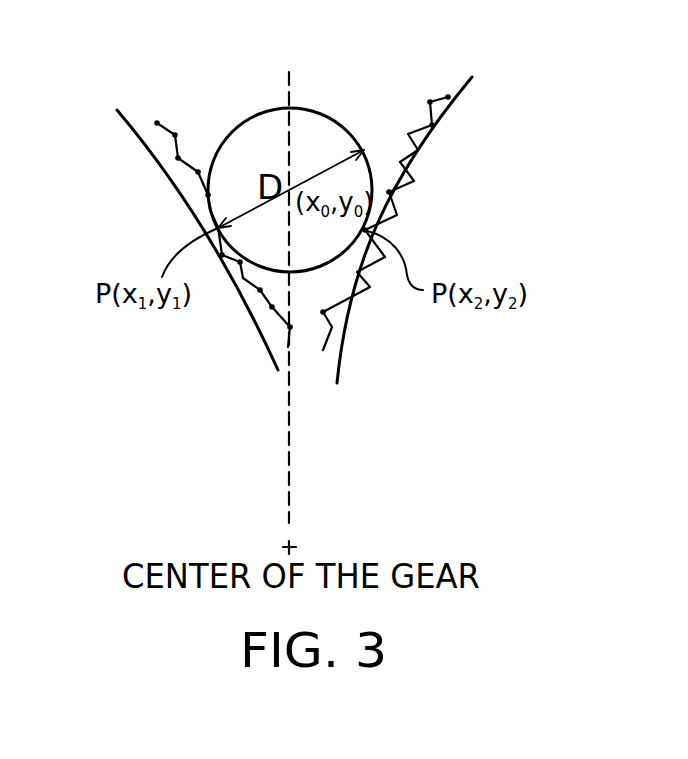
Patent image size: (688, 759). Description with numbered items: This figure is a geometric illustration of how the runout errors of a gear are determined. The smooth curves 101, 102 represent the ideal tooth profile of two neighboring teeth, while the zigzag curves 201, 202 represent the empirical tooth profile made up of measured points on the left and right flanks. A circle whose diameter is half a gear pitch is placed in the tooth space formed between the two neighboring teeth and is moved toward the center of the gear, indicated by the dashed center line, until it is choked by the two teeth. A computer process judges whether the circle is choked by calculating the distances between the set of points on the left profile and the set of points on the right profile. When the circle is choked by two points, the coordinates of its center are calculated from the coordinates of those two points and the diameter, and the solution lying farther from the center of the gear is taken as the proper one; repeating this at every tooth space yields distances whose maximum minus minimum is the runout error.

The ideal tooth profile curve 101 is at (432, 128).
The ideal tooth profile curve 102 is at (162, 170).
The empirical tooth profile zigzag curve 201 is at (430, 101).
The empirical tooth profile zigzag curve 202 is at (158, 122).